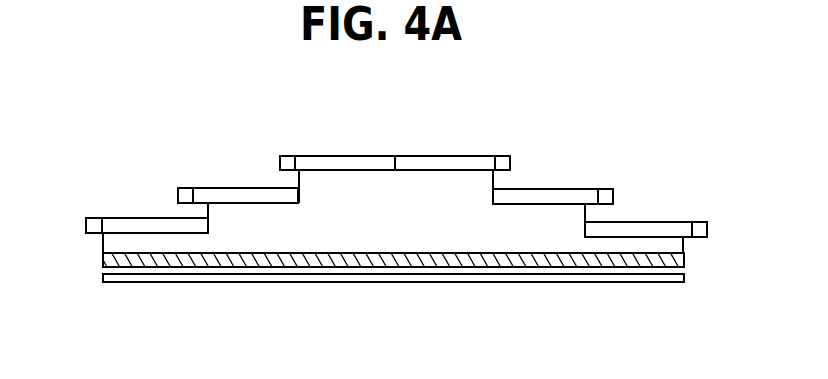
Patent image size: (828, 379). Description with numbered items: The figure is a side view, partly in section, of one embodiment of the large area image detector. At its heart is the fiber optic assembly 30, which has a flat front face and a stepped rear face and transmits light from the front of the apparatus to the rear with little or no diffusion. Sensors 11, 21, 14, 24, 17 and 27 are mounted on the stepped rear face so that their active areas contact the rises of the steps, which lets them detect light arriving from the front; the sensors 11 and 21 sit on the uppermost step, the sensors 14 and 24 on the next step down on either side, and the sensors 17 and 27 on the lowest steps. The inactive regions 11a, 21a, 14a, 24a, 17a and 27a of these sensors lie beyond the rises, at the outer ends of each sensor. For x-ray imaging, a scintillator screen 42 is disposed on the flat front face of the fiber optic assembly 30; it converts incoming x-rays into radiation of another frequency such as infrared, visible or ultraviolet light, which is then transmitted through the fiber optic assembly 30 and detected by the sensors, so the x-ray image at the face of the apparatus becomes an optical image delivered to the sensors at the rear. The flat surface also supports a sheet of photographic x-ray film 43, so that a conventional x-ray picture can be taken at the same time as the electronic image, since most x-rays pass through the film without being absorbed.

The sensor 11 is at (348, 158).
The inactive region 11a is at (290, 156).
The sensor 21 is at (414, 158).
The inactive region 21a is at (500, 156).
The sensor 14 is at (247, 190).
The inactive region 14a is at (188, 190).
The sensor 17 is at (149, 219).
The inactive region 17a is at (93, 218).
The sensor 24 is at (547, 192).
The inactive region 24a is at (608, 191).
The sensor 27 is at (651, 226).
The inactive region 27a is at (697, 222).
The fiber optic assembly 30 is at (393, 295).
The scintillator screen 42 is at (345, 262).
The photographic x-ray film 43 is at (440, 281).